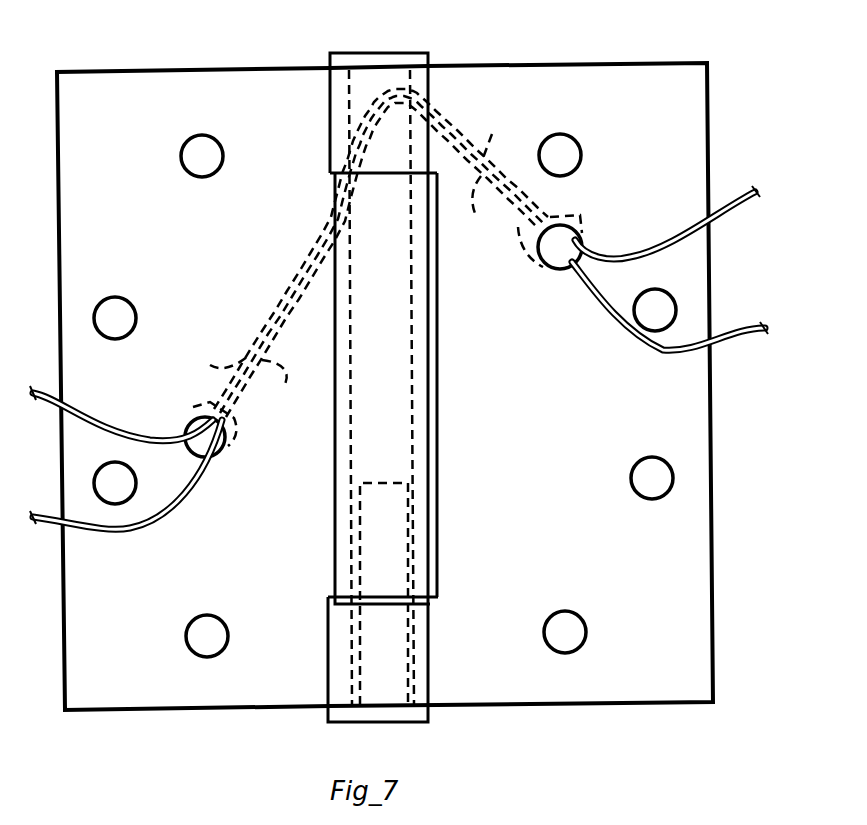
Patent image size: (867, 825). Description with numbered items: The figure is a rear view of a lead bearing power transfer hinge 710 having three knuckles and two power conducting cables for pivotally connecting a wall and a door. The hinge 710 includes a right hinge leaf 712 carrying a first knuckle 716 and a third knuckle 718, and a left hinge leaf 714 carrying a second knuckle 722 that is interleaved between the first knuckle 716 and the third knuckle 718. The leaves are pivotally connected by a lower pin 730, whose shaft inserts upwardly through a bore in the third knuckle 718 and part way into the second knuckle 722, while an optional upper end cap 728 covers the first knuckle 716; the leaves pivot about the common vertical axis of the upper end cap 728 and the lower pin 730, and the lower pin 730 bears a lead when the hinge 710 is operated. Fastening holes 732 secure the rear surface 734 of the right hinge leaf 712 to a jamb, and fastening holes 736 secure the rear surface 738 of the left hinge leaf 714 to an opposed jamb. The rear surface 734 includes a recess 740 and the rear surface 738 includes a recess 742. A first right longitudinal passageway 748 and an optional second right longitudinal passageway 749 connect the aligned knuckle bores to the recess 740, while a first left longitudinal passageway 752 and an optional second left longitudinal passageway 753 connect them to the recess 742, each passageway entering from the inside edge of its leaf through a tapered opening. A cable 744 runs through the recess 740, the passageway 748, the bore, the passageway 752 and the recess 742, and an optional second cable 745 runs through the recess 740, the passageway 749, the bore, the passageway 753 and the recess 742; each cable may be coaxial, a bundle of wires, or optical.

The power transfer hinge 710 is at (740, 143).
The right hinge leaf 712 is at (547, 64).
The left hinge leaf 714 is at (174, 71).
The first knuckle 716 is at (426, 97).
The third knuckle 718 is at (432, 670).
The second knuckle 722 is at (334, 559).
The upper end cap 728 is at (358, 56).
The lower pin 730 is at (350, 713).
The fastening holes 732 is at (630, 482).
The rear surface 734 is at (560, 401).
The fastening holes 736 is at (137, 326).
The rear surface 738 is at (220, 247).
The recess 740 is at (551, 273).
The recess 742 is at (185, 488).
The cable 744 is at (168, 440).
The second cable 745 is at (228, 443).
The first right longitudinal passageway 748 is at (509, 133).
The second right longitudinal passageway 749 is at (470, 209).
The first left longitudinal passageway 752 is at (208, 351).
The second left longitudinal passageway 753 is at (280, 380).